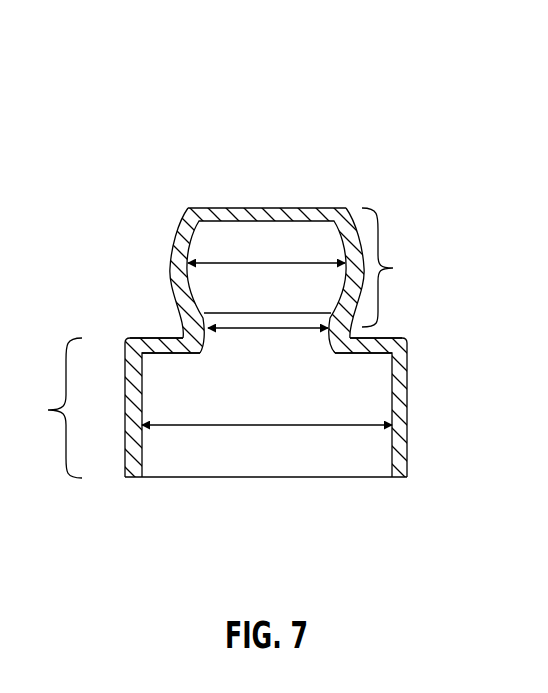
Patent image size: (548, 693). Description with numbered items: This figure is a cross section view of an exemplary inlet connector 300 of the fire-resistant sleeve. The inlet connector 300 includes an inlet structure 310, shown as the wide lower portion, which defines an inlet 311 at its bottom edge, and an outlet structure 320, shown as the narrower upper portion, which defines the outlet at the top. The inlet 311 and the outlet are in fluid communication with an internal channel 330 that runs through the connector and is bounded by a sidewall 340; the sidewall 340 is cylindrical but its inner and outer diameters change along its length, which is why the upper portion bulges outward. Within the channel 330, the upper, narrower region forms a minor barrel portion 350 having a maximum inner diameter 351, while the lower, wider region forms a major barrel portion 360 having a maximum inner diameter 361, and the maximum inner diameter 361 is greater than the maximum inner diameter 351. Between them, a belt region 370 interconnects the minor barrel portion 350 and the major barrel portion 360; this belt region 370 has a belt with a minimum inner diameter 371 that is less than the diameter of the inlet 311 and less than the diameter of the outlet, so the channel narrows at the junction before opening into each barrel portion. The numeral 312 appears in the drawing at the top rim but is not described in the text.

The inlet connector 300 is at (108, 113).
The inlet structure 310 is at (118, 457).
The inlet 311 is at (188, 478).
The top rim 312 is at (302, 207).
The outlet structure 320 is at (163, 218).
The internal channel 330 is at (290, 403).
The sidewall 340 is at (170, 276).
The minor barrel portion 350 is at (402, 267).
The maximum inner diameter 351 is at (266, 260).
The major barrel portion 360 is at (42, 408).
The maximum inner diameter 361 is at (280, 427).
The belt region 370 is at (168, 321).
The minimum inner diameter 371 is at (283, 328).